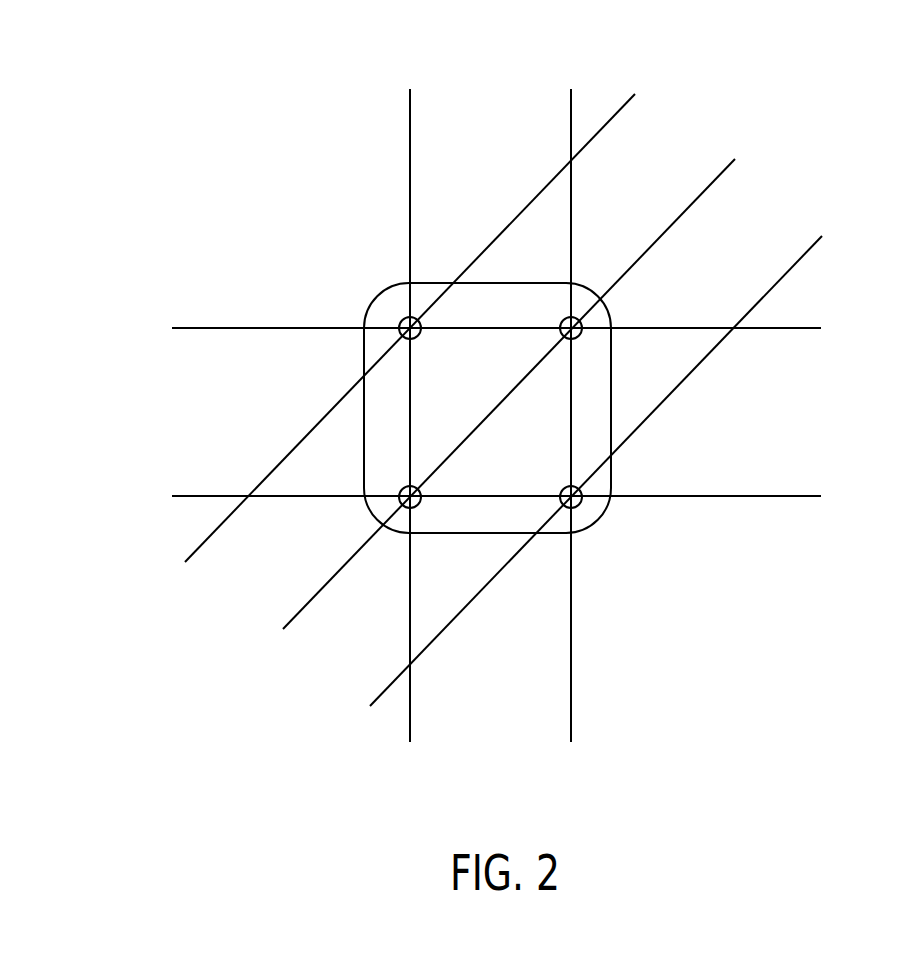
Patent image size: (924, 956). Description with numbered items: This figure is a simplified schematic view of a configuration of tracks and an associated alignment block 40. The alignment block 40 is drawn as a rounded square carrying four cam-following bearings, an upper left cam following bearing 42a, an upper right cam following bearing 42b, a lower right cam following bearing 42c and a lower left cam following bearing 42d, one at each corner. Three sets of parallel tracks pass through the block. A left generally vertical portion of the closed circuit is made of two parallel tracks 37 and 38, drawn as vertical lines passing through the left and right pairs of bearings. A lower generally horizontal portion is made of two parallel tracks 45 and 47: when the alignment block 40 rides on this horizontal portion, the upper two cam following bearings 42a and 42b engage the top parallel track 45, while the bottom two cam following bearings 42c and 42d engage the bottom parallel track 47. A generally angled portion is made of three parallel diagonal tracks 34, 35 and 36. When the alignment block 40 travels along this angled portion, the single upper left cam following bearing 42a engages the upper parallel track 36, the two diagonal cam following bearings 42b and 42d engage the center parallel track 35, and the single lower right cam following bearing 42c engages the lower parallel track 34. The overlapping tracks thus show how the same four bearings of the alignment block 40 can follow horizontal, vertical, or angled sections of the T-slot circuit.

The lower parallel track 34 is at (596, 531).
The center parallel track 35 is at (471, 394).
The upper parallel track 36 is at (350, 328).
The parallel track 37 is at (459, 383).
The parallel track 38 is at (626, 383).
The alignment block 40 is at (429, 376).
The cam following bearing 42a is at (343, 228).
The cam following bearing 42b is at (663, 224).
The cam following bearing 42c is at (641, 554).
The cam following bearing 42d is at (332, 609).
The top parallel track 45 is at (538, 284).
The bottom parallel track 47 is at (528, 453).